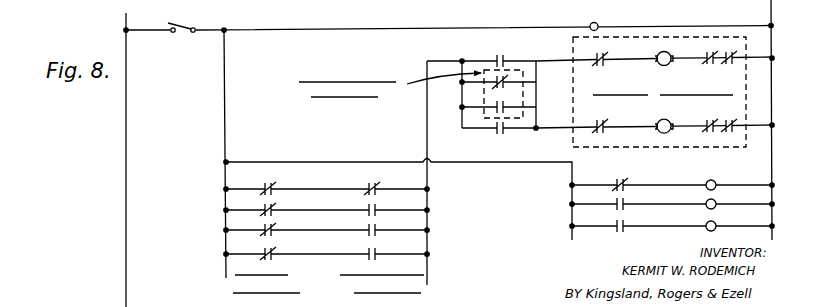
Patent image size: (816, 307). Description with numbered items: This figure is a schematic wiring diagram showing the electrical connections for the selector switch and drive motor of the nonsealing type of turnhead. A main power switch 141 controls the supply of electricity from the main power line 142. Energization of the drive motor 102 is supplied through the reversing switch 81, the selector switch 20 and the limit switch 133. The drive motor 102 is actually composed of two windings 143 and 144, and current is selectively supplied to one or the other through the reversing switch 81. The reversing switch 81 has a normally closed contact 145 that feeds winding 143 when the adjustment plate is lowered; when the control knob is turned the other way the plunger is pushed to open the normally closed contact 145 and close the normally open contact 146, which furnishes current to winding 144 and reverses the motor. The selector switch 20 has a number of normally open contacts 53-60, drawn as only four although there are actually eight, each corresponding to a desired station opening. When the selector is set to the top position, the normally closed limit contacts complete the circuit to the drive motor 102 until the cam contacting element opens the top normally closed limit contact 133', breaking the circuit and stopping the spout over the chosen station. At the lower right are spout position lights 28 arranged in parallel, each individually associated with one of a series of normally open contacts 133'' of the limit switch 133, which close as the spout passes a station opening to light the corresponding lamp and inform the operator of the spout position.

The main power switch 141 is at (181, 35).
The main power line 142 is at (126, 155).
The reversing switch 81 is at (516, 72).
The normally closed contact 145 is at (505, 84).
The normally open contact 146 is at (507, 130).
The drive motor 102 is at (750, 93).
The drive motor winding 143 is at (657, 62).
The drive motor winding 144 is at (660, 119).
The limit switch 133 is at (228, 248).
The normally closed limit contact 133' is at (259, 180).
The normally open contacts 133'' is at (621, 178).
The normally open contacts 53-60 is at (365, 183).
The selector switch 20 is at (438, 222).
The spout position lights 28 is at (716, 202).